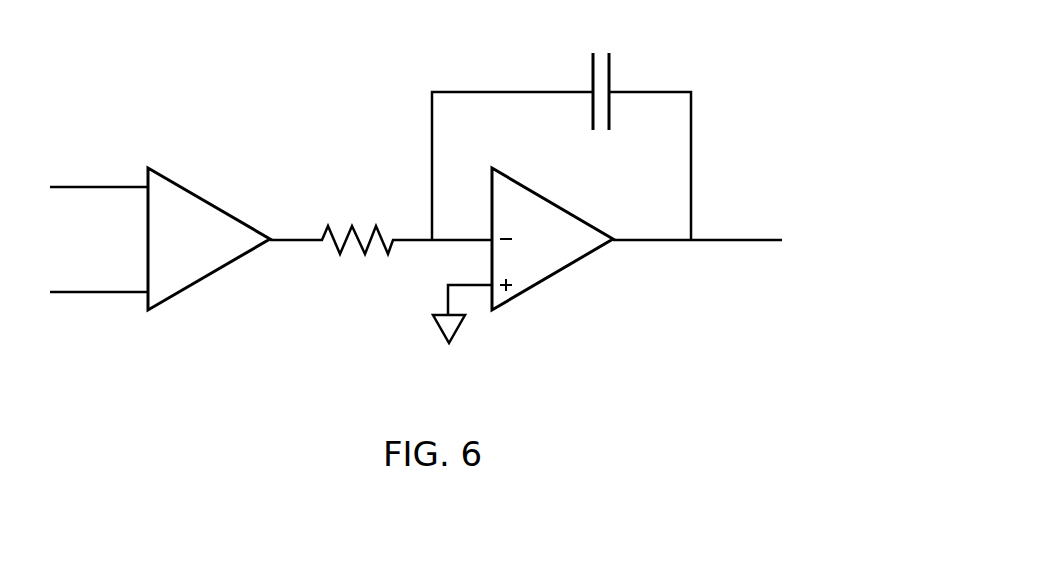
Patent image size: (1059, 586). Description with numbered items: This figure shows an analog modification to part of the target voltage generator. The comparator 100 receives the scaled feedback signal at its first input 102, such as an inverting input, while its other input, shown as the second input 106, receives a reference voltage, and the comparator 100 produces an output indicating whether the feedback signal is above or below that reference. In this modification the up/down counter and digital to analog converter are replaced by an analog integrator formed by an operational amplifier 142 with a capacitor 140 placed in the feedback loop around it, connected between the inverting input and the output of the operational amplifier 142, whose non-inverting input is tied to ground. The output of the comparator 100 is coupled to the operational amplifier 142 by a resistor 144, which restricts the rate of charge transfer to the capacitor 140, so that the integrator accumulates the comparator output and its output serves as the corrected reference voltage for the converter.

The comparator 100 is at (202, 195).
The first input 102 is at (148, 187).
The second input 106 is at (147, 297).
The capacitor 140 is at (612, 73).
The operational amplifier 142 is at (553, 277).
The resistor 144 is at (367, 255).